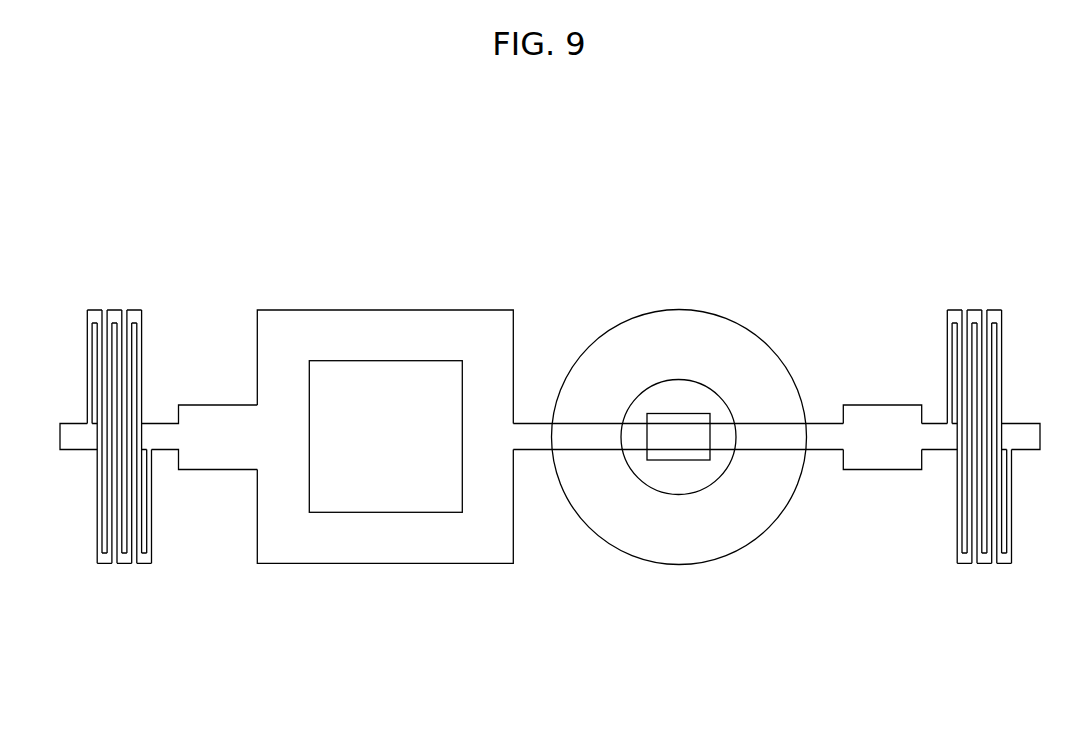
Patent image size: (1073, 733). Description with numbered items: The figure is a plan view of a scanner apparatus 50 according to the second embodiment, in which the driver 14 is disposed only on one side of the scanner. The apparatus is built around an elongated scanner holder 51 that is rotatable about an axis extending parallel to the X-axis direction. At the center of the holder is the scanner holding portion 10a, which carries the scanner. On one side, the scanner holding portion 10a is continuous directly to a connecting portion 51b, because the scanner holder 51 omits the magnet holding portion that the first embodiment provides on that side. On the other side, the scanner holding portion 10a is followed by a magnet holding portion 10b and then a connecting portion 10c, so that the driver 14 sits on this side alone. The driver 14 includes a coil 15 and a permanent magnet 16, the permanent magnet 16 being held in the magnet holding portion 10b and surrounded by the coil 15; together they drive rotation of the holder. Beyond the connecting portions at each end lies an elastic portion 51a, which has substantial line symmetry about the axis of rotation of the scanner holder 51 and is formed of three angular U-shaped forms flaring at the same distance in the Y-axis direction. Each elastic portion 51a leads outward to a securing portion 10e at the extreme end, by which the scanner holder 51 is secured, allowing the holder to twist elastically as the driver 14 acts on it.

The scanner holding portion 10a is at (341, 546).
The magnet holding portion 10b is at (603, 440).
The connecting portion 10c is at (868, 455).
The securing portion 10e is at (75, 440).
The driver 14 is at (681, 387).
The coil 15 is at (688, 327).
The permanent magnet 16 is at (697, 418).
The scanner apparatus 50 is at (975, 278).
The scanner holder 51 is at (1070, 628).
The elastic portion 51a is at (125, 567).
The connecting portion 51b is at (220, 447).